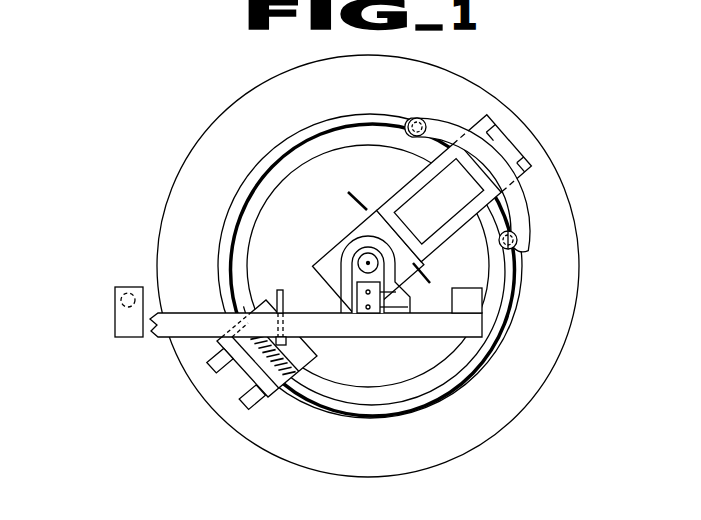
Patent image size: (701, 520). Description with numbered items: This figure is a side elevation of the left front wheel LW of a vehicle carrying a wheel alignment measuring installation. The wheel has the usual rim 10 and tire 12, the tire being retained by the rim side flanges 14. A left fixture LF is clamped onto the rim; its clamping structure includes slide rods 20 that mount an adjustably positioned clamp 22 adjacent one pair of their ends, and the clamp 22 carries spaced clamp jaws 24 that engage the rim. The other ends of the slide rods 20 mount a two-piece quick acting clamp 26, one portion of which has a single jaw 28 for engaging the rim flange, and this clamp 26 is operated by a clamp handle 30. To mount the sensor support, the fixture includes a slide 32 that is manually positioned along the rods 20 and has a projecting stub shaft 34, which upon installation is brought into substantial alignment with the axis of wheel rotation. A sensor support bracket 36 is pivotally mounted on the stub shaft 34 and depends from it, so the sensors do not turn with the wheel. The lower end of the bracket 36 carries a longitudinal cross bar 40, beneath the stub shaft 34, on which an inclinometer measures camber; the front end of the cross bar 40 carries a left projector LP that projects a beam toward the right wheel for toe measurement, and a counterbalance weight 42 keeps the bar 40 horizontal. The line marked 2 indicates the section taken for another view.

The left front wheel LW is at (233, 103).
The tire 12 is at (197, 157).
The rim 10 is at (249, 177).
The rim side flanges 14 is at (384, 116).
The clamp 22 is at (523, 192).
The slide rods 20 is at (506, 121).
The clamp jaws 24 is at (427, 124).
The left fixture LF is at (535, 216).
The quick acting clamp 26 is at (318, 357).
The single jaw 28 is at (268, 372).
The clamp handle 30 is at (281, 290).
The slide 32 is at (333, 229).
The stub shaft 34 is at (368, 254).
The sensor support bracket 36 is at (357, 258).
The cross bar 40 is at (180, 337).
The counterbalance weight 42 is at (478, 301).
The left projector LP is at (113, 316).
The section line 2- 2 is at (363, 200).